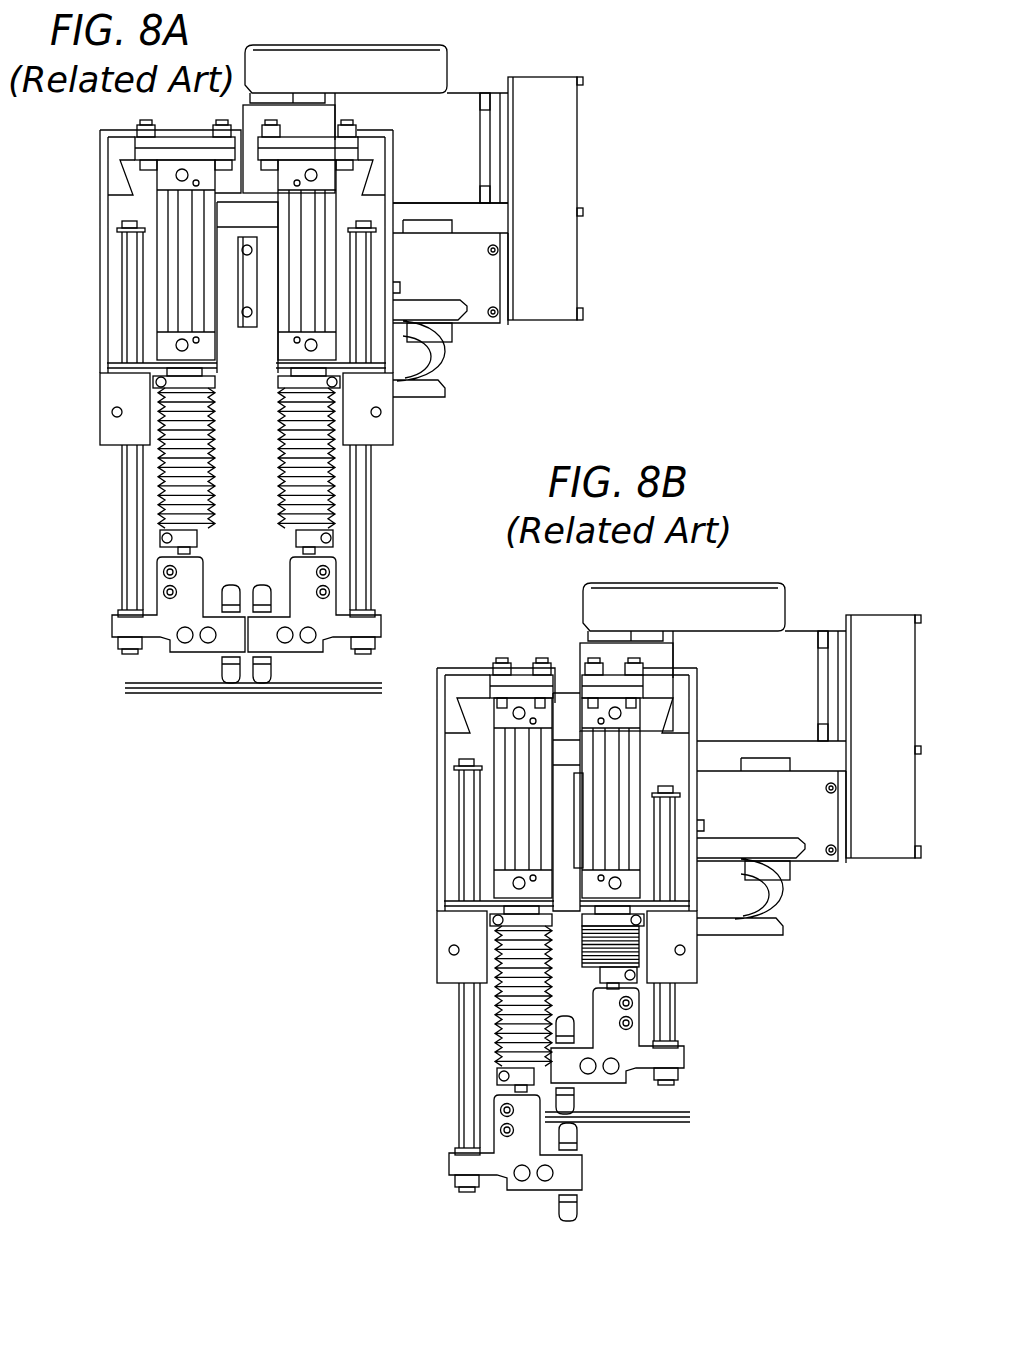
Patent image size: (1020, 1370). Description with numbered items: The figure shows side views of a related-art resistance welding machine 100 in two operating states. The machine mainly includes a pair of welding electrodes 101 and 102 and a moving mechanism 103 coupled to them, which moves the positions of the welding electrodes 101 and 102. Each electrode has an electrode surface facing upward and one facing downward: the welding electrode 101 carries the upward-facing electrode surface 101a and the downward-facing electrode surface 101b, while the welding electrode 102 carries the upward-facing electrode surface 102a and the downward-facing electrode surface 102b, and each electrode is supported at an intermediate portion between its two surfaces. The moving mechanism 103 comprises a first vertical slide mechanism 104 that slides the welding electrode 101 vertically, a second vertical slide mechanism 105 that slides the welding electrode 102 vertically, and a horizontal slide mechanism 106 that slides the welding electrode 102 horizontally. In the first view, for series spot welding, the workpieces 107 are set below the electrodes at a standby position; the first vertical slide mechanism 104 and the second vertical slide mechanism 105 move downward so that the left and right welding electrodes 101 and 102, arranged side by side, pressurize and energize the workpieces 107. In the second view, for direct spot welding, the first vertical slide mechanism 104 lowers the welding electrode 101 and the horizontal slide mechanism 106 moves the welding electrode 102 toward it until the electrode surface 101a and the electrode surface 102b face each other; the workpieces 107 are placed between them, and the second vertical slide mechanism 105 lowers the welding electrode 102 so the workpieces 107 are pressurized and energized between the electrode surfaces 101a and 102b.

In FIG. 8A, the resistance welding machine 100 is at (456, 64).
In FIG. 8B, the resistance welding machine 100 is at (768, 578).
In FIG. 8A, the welding electrode 101 is at (171, 662).
In FIG. 8B, the welding electrode 101 is at (508, 1199).
In FIG. 8A, the electrode surface 101a is at (233, 592).
In FIG. 8B, the electrode surface 101a is at (578, 1138).
In FIG. 8A, the electrode surface 101b is at (230, 694).
In FIG. 8B, the electrode surface 101b is at (578, 1208).
In FIG. 8A, the welding electrode 102 is at (322, 662).
In FIG. 8B, the welding electrode 102 is at (635, 1089).
In FIG. 8A, the electrode surface 102a is at (260, 592).
In FIG. 8B, the electrode surface 102a is at (570, 1013).
In FIG. 8A, the electrode surface 102b is at (262, 694).
In FIG. 8B, the electrode surface 102b is at (578, 1100).
In FIG. 8A, the moving mechanism 103 is at (458, 404).
In FIG. 8B, the moving mechanism 103 is at (797, 908).
In FIG. 8A, the first vertical slide mechanism 104 is at (148, 331).
In FIG. 8B, the first vertical slide mechanism 104 is at (490, 850).
In FIG. 8A, the second vertical slide mechanism 105 is at (269, 347).
In FIG. 8B, the second vertical slide mechanism 105 is at (653, 882).
In FIG. 8A, the horizontal slide mechanism 106 is at (488, 336).
In FIG. 8B, the horizontal slide mechanism 106 is at (833, 870).
In FIG. 8A, the workpieces 107 is at (346, 698).
In FIG. 8B, the workpieces 107 is at (657, 1127).